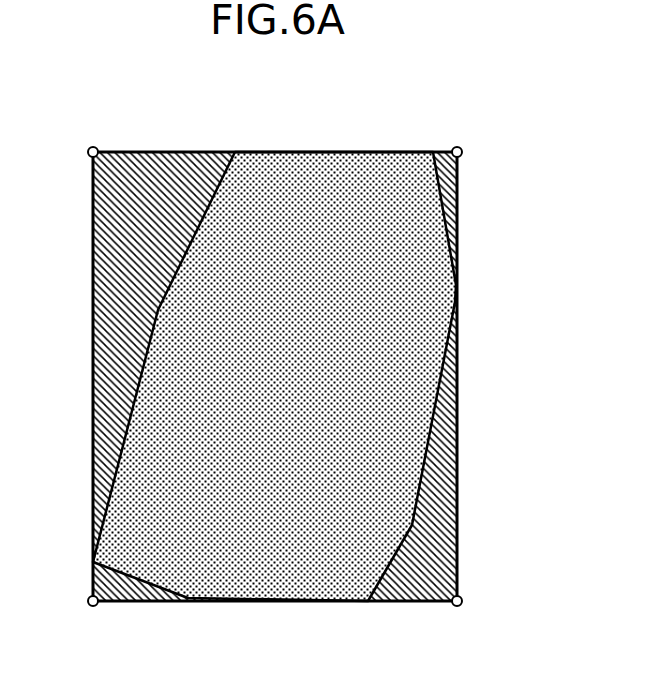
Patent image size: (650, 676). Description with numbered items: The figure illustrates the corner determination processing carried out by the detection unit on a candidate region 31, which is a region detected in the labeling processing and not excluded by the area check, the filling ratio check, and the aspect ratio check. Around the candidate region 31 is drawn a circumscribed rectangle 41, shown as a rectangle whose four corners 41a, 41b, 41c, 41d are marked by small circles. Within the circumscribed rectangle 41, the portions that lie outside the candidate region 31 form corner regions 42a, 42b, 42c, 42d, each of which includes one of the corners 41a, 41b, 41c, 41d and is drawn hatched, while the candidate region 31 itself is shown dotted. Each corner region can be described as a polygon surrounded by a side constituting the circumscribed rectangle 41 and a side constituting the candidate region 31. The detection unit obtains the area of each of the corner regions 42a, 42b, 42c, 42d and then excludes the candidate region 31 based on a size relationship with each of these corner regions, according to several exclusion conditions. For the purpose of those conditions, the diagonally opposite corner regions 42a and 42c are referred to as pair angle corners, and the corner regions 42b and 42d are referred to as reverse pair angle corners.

The candidate region 31 is at (440, 282).
The circumscribed rectangle 41 is at (460, 218).
The corner 41a is at (96, 147).
The corner 41b is at (461, 147).
The corner 41c is at (461, 606).
The corner 41d is at (90, 607).
The corner region 42a is at (105, 273).
The corner region 42b is at (452, 180).
The corner region 42c is at (450, 510).
The corner region 42d is at (162, 592).